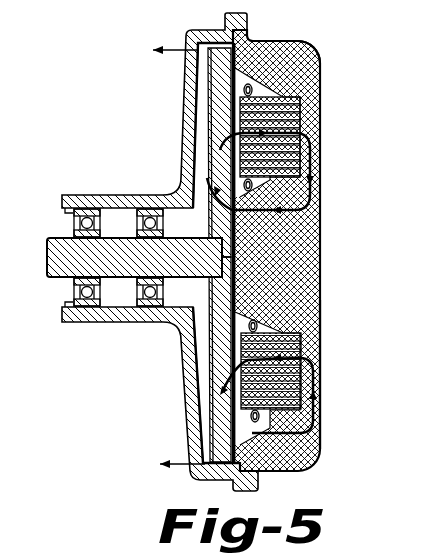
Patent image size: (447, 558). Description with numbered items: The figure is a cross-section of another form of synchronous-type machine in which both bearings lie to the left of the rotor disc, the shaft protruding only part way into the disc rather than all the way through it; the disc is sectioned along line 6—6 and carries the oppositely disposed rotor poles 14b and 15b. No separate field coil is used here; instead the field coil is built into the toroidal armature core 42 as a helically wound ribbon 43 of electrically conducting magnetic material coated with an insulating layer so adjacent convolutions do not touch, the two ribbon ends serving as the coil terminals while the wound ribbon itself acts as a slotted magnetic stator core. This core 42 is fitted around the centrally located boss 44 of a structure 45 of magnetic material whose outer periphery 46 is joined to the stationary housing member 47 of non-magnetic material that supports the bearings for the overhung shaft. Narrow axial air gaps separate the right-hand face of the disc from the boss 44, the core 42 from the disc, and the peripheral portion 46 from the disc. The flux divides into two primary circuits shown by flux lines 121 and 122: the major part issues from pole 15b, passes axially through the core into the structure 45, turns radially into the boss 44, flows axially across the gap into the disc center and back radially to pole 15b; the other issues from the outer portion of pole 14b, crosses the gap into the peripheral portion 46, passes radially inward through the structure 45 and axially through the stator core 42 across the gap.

The section line 6— 6 is at (171, 259).
The rotor pole 14b is at (223, 390).
The rotor pole 15b is at (188, 126).
The armature core 42 is at (320, 377).
The helically wound ribbon 43 is at (322, 108).
The boss 44 is at (310, 252).
The structure of magnetic material 45 is at (324, 322).
The outer periphery 46 is at (268, 41).
The stationary housing member 47 is at (186, 88).
The flux line 121 is at (324, 198).
The flux line 122 is at (322, 408).